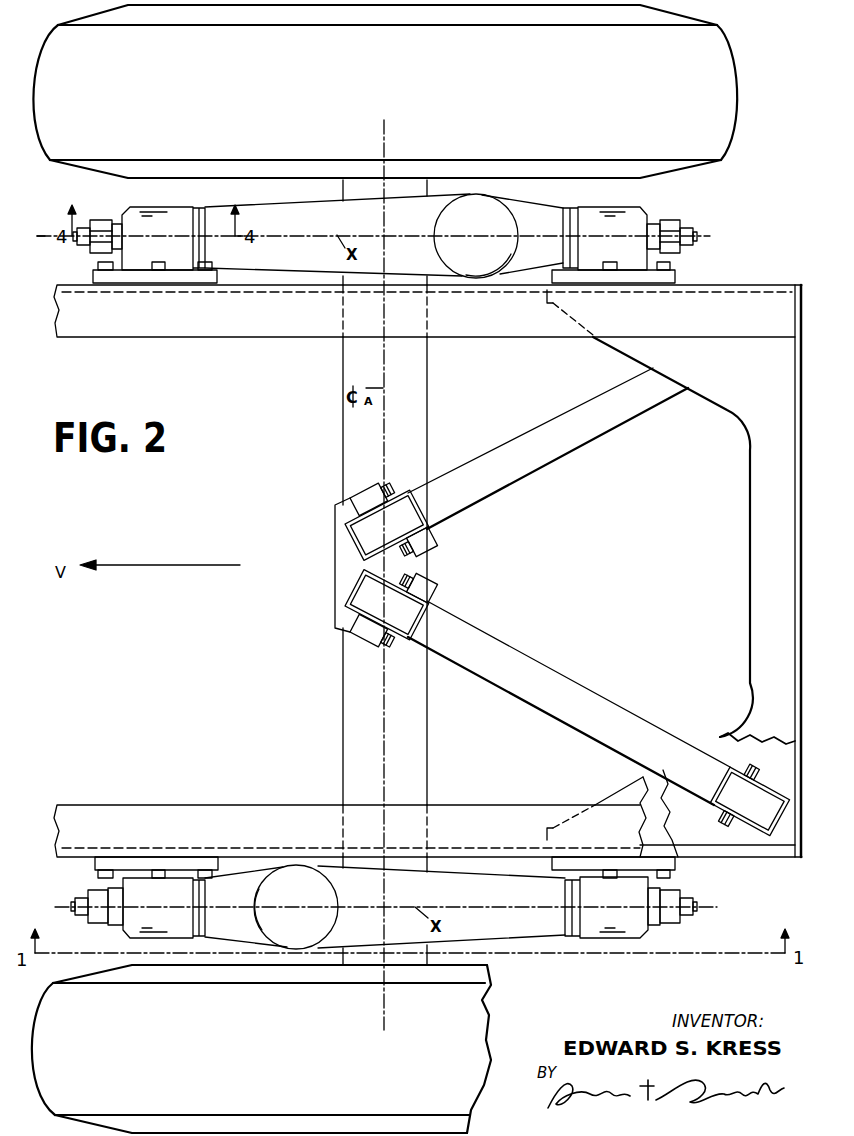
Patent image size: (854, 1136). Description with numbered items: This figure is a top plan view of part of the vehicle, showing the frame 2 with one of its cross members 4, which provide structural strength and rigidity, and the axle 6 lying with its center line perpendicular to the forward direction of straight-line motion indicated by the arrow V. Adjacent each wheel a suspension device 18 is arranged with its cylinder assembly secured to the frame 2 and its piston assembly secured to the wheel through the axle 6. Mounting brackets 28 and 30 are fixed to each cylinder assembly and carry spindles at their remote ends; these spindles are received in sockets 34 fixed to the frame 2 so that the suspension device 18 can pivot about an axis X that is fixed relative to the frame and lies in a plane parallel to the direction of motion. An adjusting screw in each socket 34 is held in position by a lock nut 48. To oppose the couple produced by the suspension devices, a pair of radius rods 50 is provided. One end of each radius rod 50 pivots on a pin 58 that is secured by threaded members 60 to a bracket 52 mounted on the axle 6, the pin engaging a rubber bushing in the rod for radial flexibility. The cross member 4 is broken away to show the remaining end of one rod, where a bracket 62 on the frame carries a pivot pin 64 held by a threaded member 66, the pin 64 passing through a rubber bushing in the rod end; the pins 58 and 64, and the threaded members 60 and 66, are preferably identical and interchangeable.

The frame 2 is at (95, 322).
The cross member 4 is at (763, 478).
The axle 6 is at (418, 398).
The suspension device 18 is at (488, 278).
The mounting bracket 28 is at (547, 212).
The mounting bracket 30 is at (277, 213).
The socket 34 is at (173, 222).
The lock nut 48 is at (105, 225).
The radius rod 50 is at (513, 467).
The bracket 52 is at (343, 553).
The pin 58 is at (377, 493).
The threaded member 60 is at (385, 490).
The bracket 62 is at (787, 778).
The pivot pin 64 is at (735, 824).
The threaded member 66 is at (752, 762).